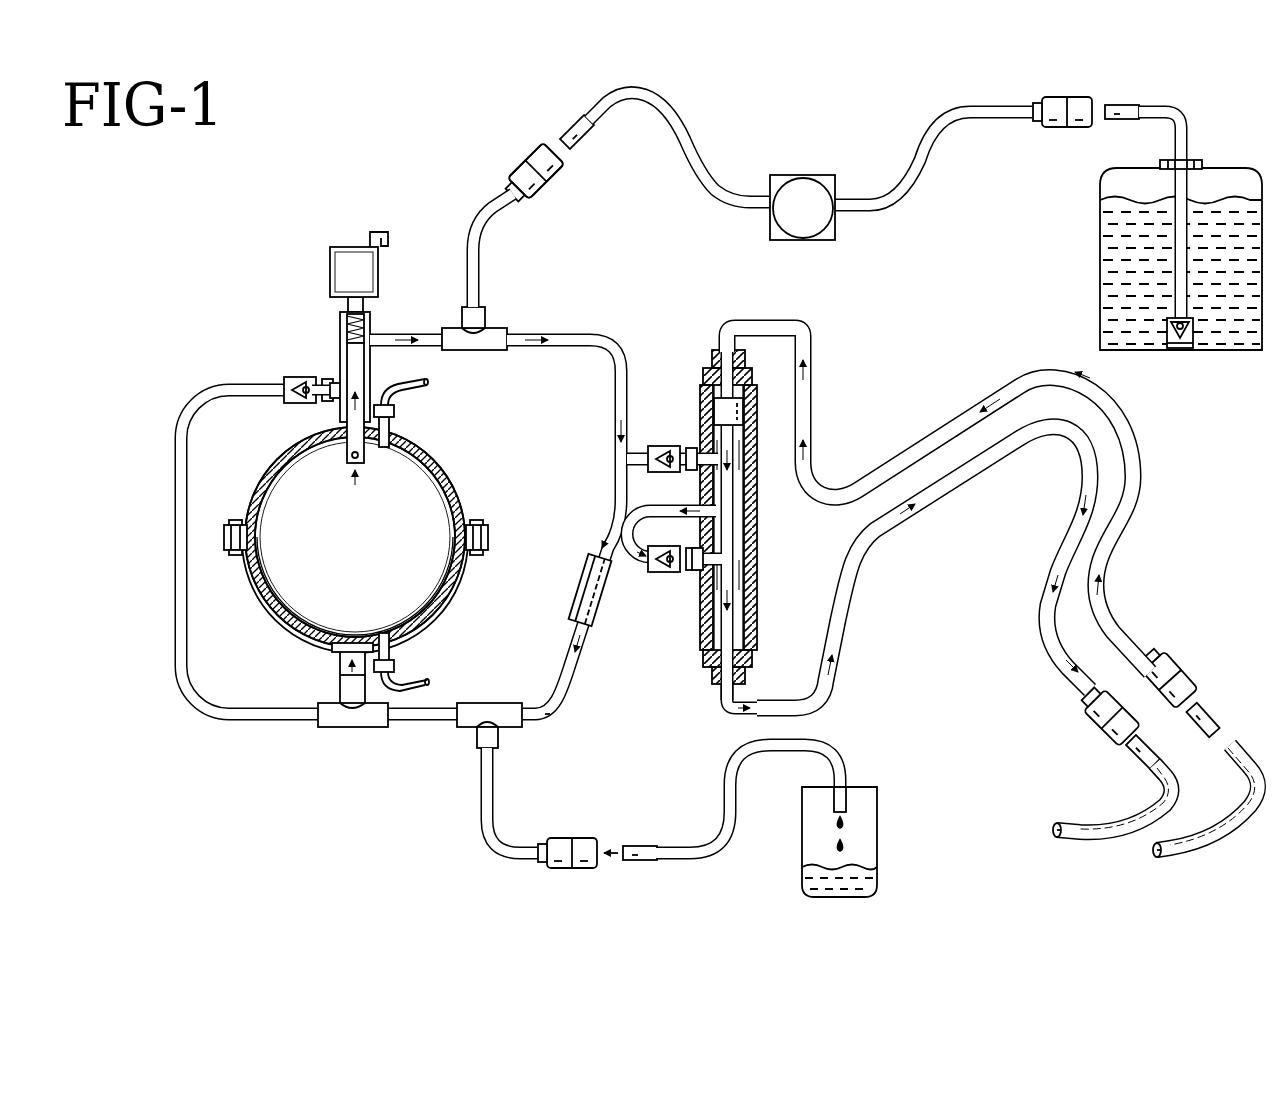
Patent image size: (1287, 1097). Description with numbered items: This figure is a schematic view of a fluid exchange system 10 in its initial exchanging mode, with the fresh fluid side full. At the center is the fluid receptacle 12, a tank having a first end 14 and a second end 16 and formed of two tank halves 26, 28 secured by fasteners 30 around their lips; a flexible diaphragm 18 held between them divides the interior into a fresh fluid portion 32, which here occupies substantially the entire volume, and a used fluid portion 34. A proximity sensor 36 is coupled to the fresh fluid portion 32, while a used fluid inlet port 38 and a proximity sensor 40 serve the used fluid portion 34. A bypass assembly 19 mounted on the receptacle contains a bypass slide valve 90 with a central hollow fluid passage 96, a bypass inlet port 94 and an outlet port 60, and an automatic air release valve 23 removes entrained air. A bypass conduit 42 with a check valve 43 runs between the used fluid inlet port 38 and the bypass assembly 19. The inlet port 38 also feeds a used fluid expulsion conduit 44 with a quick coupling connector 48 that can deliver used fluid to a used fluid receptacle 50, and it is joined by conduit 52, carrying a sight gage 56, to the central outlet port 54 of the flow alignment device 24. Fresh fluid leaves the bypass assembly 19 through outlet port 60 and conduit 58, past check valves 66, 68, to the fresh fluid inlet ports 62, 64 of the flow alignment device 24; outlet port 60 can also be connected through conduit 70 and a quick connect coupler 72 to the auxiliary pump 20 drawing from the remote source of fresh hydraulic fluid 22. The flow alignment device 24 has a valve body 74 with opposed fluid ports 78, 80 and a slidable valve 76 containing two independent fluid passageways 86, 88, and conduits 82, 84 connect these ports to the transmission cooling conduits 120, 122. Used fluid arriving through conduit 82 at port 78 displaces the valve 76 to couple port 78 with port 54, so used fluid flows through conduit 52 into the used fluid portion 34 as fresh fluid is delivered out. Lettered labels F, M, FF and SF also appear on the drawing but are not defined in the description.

The fluid exchange system 10 is at (294, 255).
The fluid receptacle 12 is at (730, 451).
The first end 14 is at (371, 526).
The second end 16 is at (300, 626).
The intermediate separation member 18 is at (490, 537).
The bypass assembly 19 is at (301, 382).
The auxiliary pump 20 is at (840, 236).
The remote source of fresh hydraulic fluid 22 is at (1100, 306).
The automatic air release valve 23 is at (378, 272).
The flow alignment device 24 is at (707, 524).
The tank half 26 is at (463, 512).
The tank half 28 is at (462, 583).
The fasteners 30 is at (232, 524).
The fresh fluid portion 32 is at (455, 480).
The used fluid portion 34 is at (447, 612).
The proximity sensor 36 is at (395, 411).
The used fluid inlet port 38 is at (340, 664).
The proximity sensor 40 is at (393, 666).
The bypass conduit 42 is at (224, 386).
The check valve 43 is at (297, 380).
The used fluid expulsion conduit 44 is at (494, 790).
The quick coupling connector 48 is at (574, 836).
The used fluid receptacle 50 is at (842, 842).
The conduit 52 is at (560, 717).
The central outlet port 54 is at (714, 522).
The sight gage 56 is at (575, 586).
The conduit 58 is at (572, 338).
The outlet port 60 is at (384, 336).
The fresh fluid inlet port 62 is at (660, 446).
The fresh fluid inlet port 64 is at (695, 571).
The check valve 66 is at (650, 446).
The check valve 68 is at (660, 572).
The conduit 70 is at (490, 232).
The quick connect coupler 72 is at (516, 166).
The valve body 74 is at (748, 563).
The valve 76 is at (752, 520).
The fluid port 78 is at (744, 402).
The fluid port 80 is at (746, 656).
The conduit 82 is at (855, 472).
The conduit 84 is at (846, 608).
The fluid passageway 86 is at (740, 466).
The fluid passageway 88 is at (750, 612).
The bypass slide valve 90 is at (405, 389).
The bypass inlet port 94 is at (333, 397).
The central hollow fluid passage 96 is at (330, 356).
The cooling conduit 120 is at (1118, 816).
The cooling conduit 122 is at (1242, 836).
The female connector F is at (555, 868).
The male connector M is at (641, 845).
The food fluid FF is at (305, 572).
The spent fluid SF is at (805, 877).